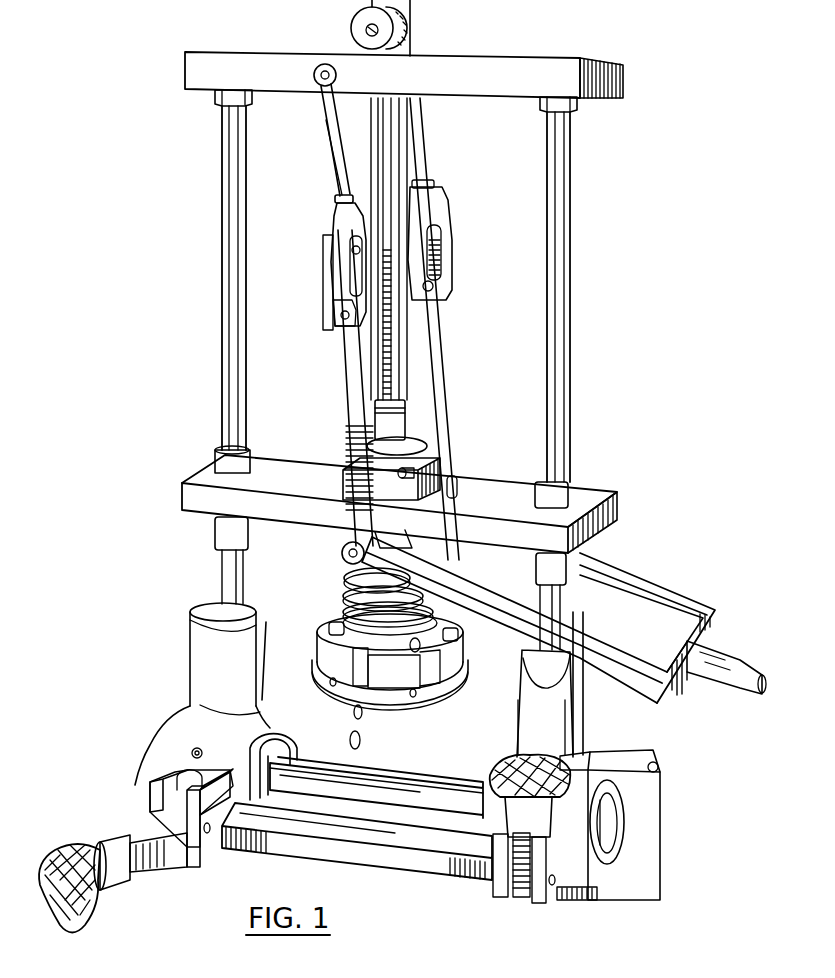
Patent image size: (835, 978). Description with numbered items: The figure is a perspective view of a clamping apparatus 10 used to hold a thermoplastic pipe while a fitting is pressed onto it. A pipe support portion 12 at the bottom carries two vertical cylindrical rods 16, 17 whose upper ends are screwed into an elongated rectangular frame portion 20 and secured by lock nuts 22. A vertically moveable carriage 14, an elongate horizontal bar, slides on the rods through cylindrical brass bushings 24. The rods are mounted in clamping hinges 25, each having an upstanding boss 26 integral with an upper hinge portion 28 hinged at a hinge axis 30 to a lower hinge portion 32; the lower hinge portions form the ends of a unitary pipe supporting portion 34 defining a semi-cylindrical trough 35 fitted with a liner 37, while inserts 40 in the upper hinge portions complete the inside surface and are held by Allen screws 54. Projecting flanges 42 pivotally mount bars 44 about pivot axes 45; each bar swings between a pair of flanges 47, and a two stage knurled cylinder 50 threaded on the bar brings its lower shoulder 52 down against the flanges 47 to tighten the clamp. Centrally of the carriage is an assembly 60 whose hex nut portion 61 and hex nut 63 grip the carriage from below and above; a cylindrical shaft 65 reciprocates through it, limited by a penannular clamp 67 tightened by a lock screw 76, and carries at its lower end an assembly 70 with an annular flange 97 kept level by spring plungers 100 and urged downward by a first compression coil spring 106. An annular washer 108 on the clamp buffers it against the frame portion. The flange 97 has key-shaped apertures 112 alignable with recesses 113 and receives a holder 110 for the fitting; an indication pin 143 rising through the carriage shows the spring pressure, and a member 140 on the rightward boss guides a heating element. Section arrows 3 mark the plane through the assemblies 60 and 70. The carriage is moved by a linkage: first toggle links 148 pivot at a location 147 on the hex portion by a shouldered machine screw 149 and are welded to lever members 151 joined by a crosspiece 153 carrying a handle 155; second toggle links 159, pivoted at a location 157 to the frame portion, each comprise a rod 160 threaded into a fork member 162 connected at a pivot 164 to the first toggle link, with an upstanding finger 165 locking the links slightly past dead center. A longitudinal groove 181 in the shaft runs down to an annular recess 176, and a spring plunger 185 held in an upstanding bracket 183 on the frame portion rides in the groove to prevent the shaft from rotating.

The clamping apparatus 10 is at (638, 326).
The pipe support portion 12 is at (678, 870).
The vertically moveable carriage 14 is at (612, 516).
The vertical cylindrical rod 16 is at (567, 230).
The vertical cylindrical rod 17 is at (222, 268).
The frame portion 20 is at (198, 72).
The lock nuts 22 is at (218, 102).
The cylindrical brass bushings 24 is at (226, 462).
The clamping hinge 25 is at (200, 676).
The upstanding boss 26 is at (196, 646).
The upper hinge portion 28 is at (150, 766).
The hinge axis 30 is at (355, 732).
The lower hinge portion 32 is at (150, 818).
The pipe supporting portion 34 is at (372, 848).
The semi-cylindrical trough 35 is at (618, 838).
The liner 37 is at (398, 785).
The inserts 40 is at (272, 752).
The projecting flanges 42 is at (195, 860).
The bar 44 is at (160, 855).
The pivot axis 45 is at (214, 836).
The flanges 47 is at (148, 800).
The two stage knurled cylinder 50 is at (80, 915).
The lower shoulder 52 is at (128, 878).
The Allen screws 54 is at (190, 752).
The assembly 60 is at (481, 443).
The hex nut portion 61 is at (405, 541).
The hex nut 63 is at (416, 474).
The cylindrical shaft 65 is at (402, 186).
The penannular clamp 67 is at (420, 450).
The assembly 70 is at (236, 603).
The lock screw 76 is at (372, 468).
The annular flange 97 is at (322, 700).
The spring plungers 100 is at (322, 640).
The first compression coil spring 106 is at (392, 628).
The annular washer 108 is at (372, 440).
The holder 110 is at (456, 664).
The key-shaped apertures 112 is at (374, 718).
The recesses 113 is at (330, 624).
The member 140 is at (523, 665).
The indication pin 143 is at (447, 578).
The pivot location 147 is at (340, 556).
The first toggle links 148 is at (352, 352).
The shouldered machine screw 149 is at (350, 545).
The lever members 151 is at (678, 595).
The crosspiece 153 is at (680, 688).
The handle 155 is at (742, 692).
The pivot location 157 is at (313, 77).
The second toggle links 159 is at (335, 136).
The rod 160 is at (336, 168).
The fork member 162 is at (347, 218).
The pivot connection 164 is at (332, 312).
The upstanding finger 165 is at (332, 268).
The annular recess 176 is at (388, 410).
The longitudinal groove 181 is at (388, 155).
The upstanding bracket 183 is at (358, 22).
The spring plunger 185 is at (366, 33).
The section line 3 is at (313, 570).